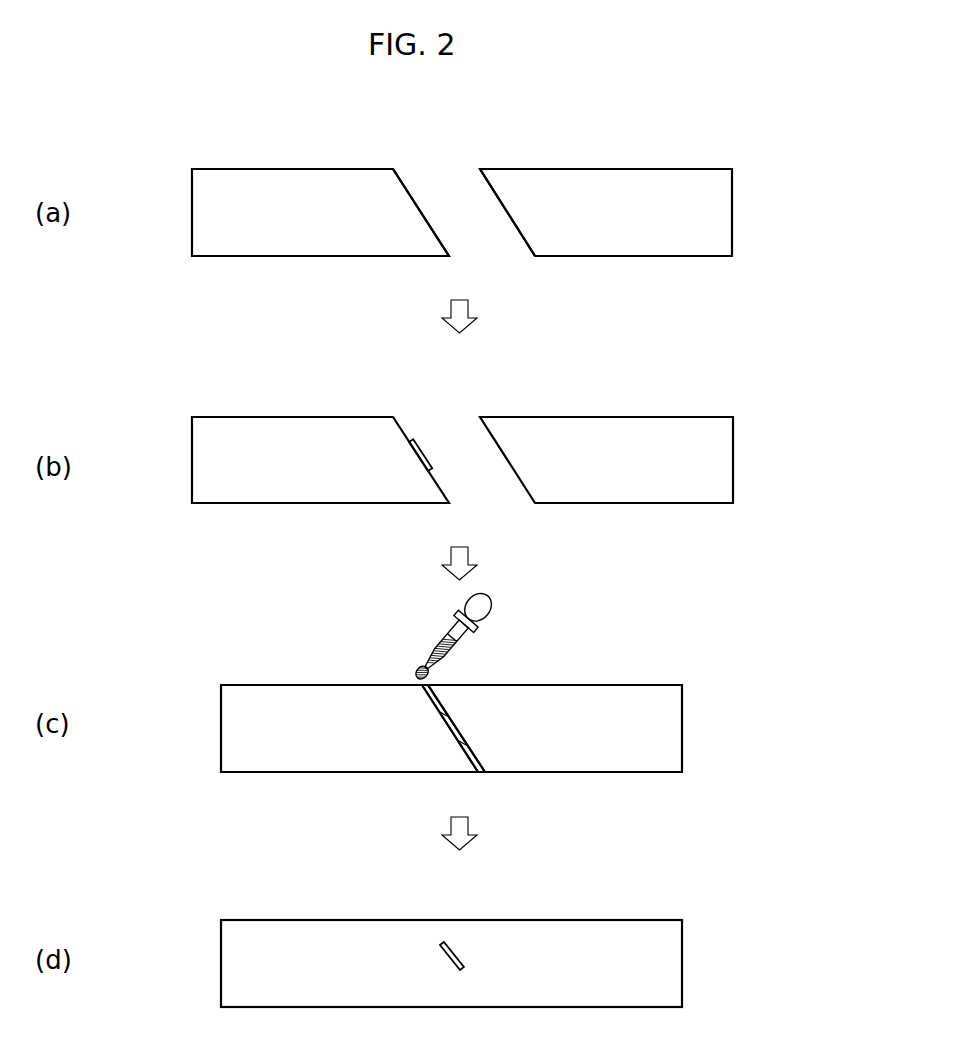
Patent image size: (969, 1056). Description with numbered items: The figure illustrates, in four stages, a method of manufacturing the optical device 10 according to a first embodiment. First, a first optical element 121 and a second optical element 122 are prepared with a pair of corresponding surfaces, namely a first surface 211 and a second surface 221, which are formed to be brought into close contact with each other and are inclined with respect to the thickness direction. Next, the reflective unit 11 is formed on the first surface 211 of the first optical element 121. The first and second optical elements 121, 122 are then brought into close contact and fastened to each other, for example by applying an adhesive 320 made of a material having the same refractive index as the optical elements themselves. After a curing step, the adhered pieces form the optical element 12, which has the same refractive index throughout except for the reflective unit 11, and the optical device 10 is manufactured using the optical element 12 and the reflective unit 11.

The optical device 10 is at (504, 939).
The reflective unit 11 is at (422, 441).
The optical element 12 is at (535, 932).
The first optical element 121 is at (333, 179).
The second optical element 122 is at (585, 180).
The first surface 211 is at (404, 181).
The second surface 221 is at (525, 240).
The adhesive 320 is at (420, 672).